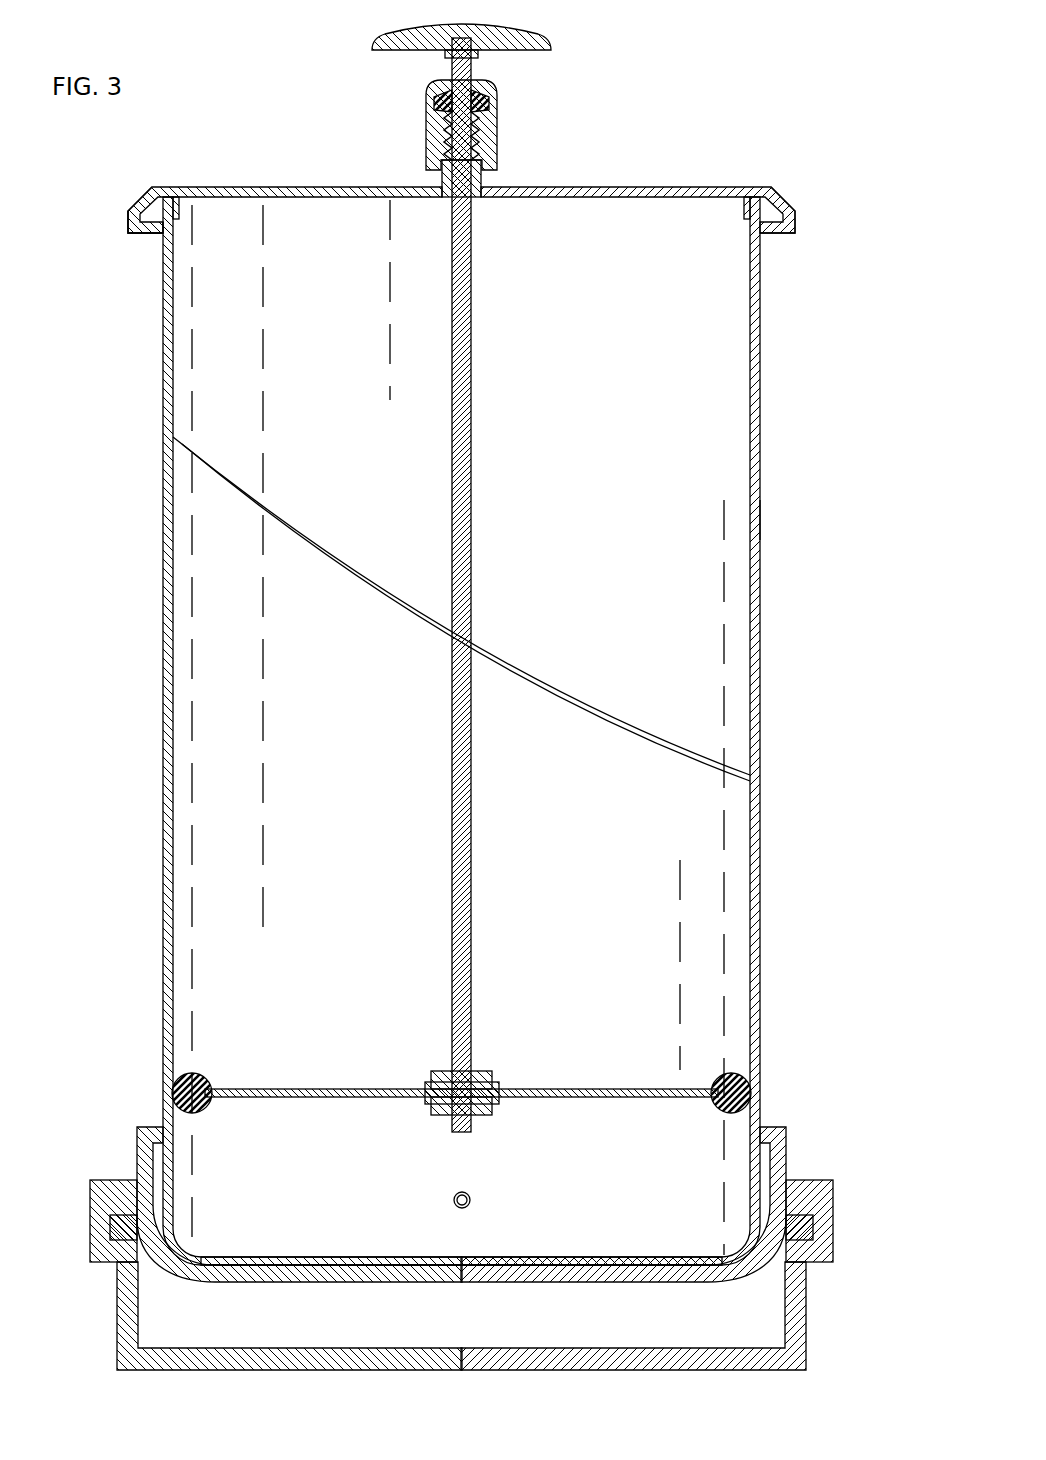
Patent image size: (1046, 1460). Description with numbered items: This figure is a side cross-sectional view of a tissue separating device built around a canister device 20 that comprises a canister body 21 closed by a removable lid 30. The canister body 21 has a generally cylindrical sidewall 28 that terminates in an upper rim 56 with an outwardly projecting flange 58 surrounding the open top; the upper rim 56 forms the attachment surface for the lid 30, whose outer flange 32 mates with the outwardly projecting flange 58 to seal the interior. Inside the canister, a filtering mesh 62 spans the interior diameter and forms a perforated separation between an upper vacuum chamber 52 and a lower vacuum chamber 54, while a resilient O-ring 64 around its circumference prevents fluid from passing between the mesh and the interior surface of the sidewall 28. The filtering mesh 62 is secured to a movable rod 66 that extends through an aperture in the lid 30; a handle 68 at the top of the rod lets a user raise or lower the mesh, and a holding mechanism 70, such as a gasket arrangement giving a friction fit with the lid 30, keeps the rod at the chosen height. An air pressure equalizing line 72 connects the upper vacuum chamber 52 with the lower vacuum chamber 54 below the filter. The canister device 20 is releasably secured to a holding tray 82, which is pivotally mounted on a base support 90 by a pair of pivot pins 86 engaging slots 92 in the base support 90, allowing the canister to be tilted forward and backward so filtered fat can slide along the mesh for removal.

The canister device 20 is at (777, 641).
The canister body 21 is at (762, 373).
The sidewall 28 is at (752, 535).
The lid 30 is at (692, 187).
The outer flange 32 is at (135, 212).
The upper vacuum chamber 52 is at (602, 849).
The lower vacuum chamber 54 is at (620, 1190).
The upper rim 56 is at (136, 243).
The outwardly projecting flange 58 is at (768, 252).
The filtering mesh 62 is at (655, 1088).
The resilient O-ring 64 is at (738, 1072).
The movable rod 66 is at (472, 290).
The handle 68 is at (532, 31).
The holding mechanism 70 is at (428, 123).
The air pressure equalizing line 72 is at (454, 1200).
The holding tray 82 is at (785, 1150).
The pivot pins 86 is at (115, 1227).
The base support 90 is at (800, 1325).
The slots 92 is at (135, 1185).